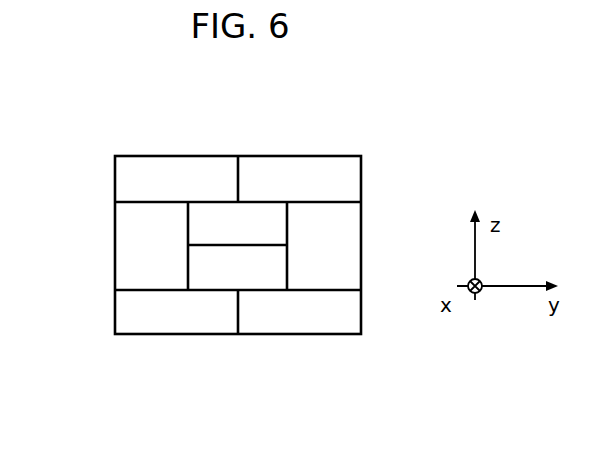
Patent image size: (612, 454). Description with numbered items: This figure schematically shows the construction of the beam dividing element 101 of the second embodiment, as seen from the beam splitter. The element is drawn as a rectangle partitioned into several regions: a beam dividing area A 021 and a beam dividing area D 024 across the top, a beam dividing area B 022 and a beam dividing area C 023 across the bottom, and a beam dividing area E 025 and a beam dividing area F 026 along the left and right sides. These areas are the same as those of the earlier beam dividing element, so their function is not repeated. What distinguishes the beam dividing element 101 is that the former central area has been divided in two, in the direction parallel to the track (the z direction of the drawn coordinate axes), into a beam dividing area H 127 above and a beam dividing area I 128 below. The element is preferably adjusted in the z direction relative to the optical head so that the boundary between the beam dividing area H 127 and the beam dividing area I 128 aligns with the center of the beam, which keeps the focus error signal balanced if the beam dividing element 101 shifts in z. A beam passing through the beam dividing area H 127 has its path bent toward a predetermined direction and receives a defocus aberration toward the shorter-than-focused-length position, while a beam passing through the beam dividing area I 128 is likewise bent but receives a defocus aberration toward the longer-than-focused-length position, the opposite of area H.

The beam dividing element 101 is at (123, 337).
The beam dividing area A 021 is at (167, 156).
The beam dividing area B 022 is at (187, 335).
The beam dividing area C 023 is at (310, 335).
The beam dividing area D 024 is at (314, 156).
The beam dividing area E 025 is at (115, 263).
The beam dividing area F 026 is at (361, 258).
The beam dividing area H 127 is at (213, 212).
The beam dividing area I 128 is at (262, 310).